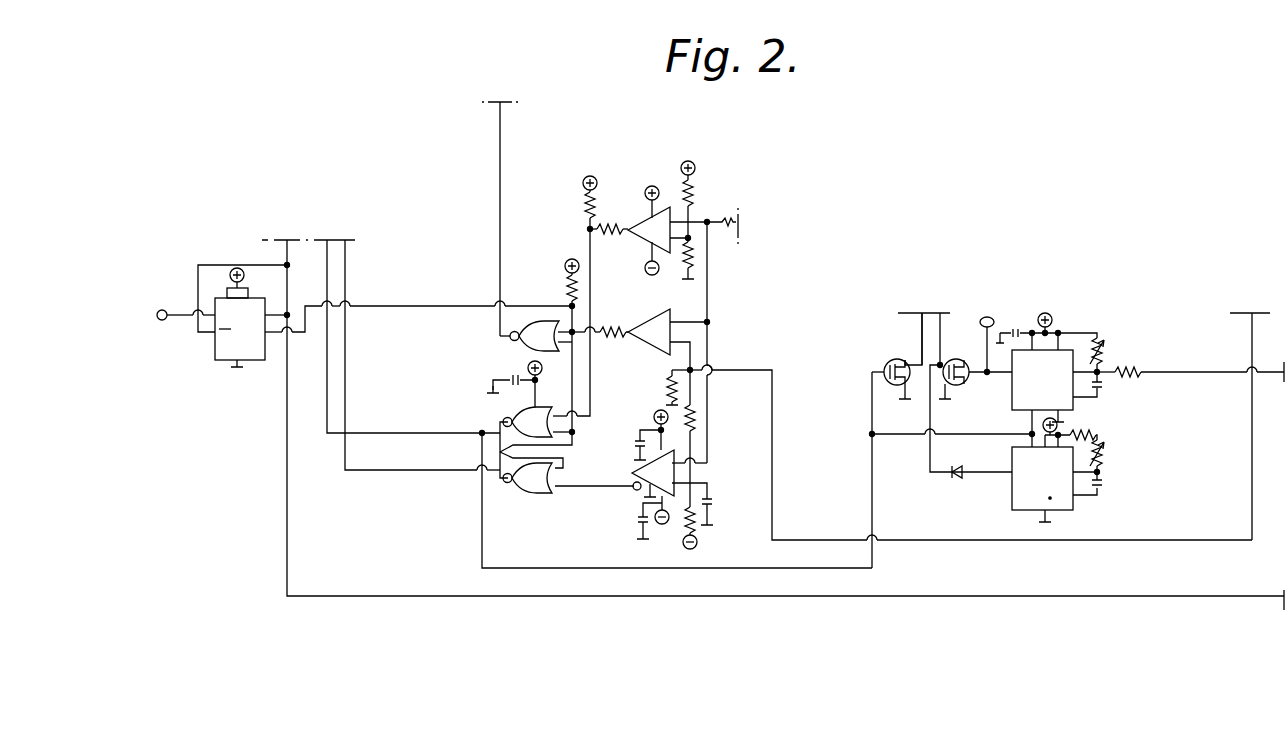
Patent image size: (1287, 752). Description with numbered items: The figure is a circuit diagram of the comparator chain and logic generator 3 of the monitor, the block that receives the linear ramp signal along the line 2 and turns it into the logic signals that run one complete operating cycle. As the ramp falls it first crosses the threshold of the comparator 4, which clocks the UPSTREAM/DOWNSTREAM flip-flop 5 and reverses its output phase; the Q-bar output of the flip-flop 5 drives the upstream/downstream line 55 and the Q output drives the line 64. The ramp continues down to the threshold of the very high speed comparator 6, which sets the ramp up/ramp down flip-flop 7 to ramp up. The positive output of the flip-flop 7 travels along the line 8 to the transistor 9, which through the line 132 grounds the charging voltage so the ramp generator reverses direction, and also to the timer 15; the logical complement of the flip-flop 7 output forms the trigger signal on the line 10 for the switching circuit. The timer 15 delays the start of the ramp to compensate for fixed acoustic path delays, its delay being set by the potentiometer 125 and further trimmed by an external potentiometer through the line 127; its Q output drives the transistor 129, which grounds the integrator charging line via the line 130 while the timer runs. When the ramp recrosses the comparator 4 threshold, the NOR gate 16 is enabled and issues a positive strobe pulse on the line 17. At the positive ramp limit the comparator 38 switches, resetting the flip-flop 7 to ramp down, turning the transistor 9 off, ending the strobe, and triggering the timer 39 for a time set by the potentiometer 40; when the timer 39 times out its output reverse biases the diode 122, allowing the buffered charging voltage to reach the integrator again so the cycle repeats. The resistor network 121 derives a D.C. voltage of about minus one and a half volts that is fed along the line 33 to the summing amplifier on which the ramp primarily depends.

The line 2 is at (722, 222).
The comparator chain and logic generator 3 is at (763, 310).
The comparator 4 is at (641, 320).
The UPSTREAM/DOWNSTREAM flip-flop 5 is at (257, 362).
The very high speed comparator 6 is at (631, 479).
The ramp up/ramp down flip-flop 7 is at (496, 413).
The line 8 is at (327, 245).
The transistor 9 is at (886, 364).
The line 10 is at (345, 245).
The timer 15 is at (1011, 399).
The NOR gate 16 is at (541, 320).
The line 17 is at (502, 150).
The line 33 is at (1165, 540).
The comparator 38 is at (643, 221).
The timer 39 is at (1012, 499).
The potentiometer 40 is at (1104, 456).
The upstream/downstream line 55 is at (287, 245).
The line 64 is at (186, 311).
The resistor network 121 is at (662, 384).
The diode 122 is at (956, 480).
The potentiometer 125 is at (1104, 354).
The line 127 is at (1178, 375).
The transistor 129 is at (970, 346).
The line 130 is at (941, 326).
The line 132 is at (918, 328).